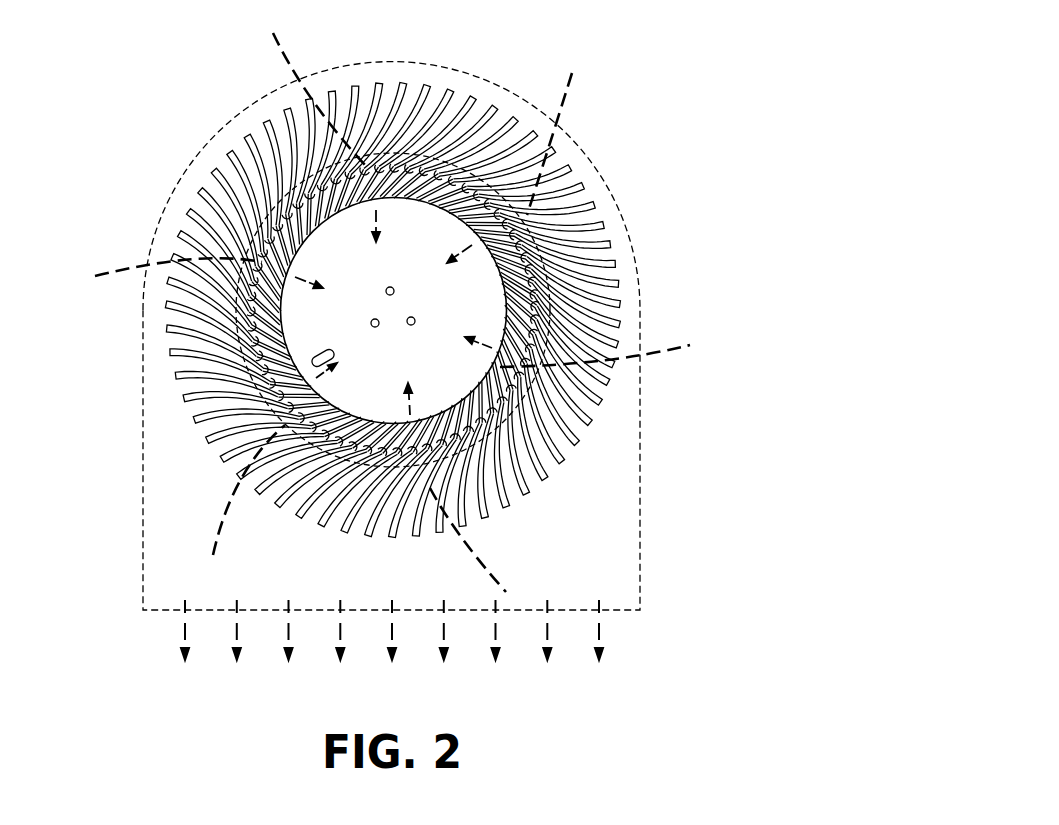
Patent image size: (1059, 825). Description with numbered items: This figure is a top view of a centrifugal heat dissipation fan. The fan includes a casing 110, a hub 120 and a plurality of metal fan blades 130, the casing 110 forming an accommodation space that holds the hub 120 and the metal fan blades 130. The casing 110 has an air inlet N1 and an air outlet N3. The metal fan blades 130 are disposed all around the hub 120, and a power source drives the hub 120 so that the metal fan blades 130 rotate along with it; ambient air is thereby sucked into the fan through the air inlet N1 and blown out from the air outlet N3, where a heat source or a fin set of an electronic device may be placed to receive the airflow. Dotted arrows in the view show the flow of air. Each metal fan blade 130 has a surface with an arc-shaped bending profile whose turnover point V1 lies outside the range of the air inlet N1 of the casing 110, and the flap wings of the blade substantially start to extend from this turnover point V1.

The casing 110 is at (642, 490).
The hub 120 is at (338, 250).
The metal fan blades 130 is at (233, 158).
The air inlet N1 is at (530, 233).
The air outlet N3 is at (616, 623).
The turnover point V1 is at (222, 324).